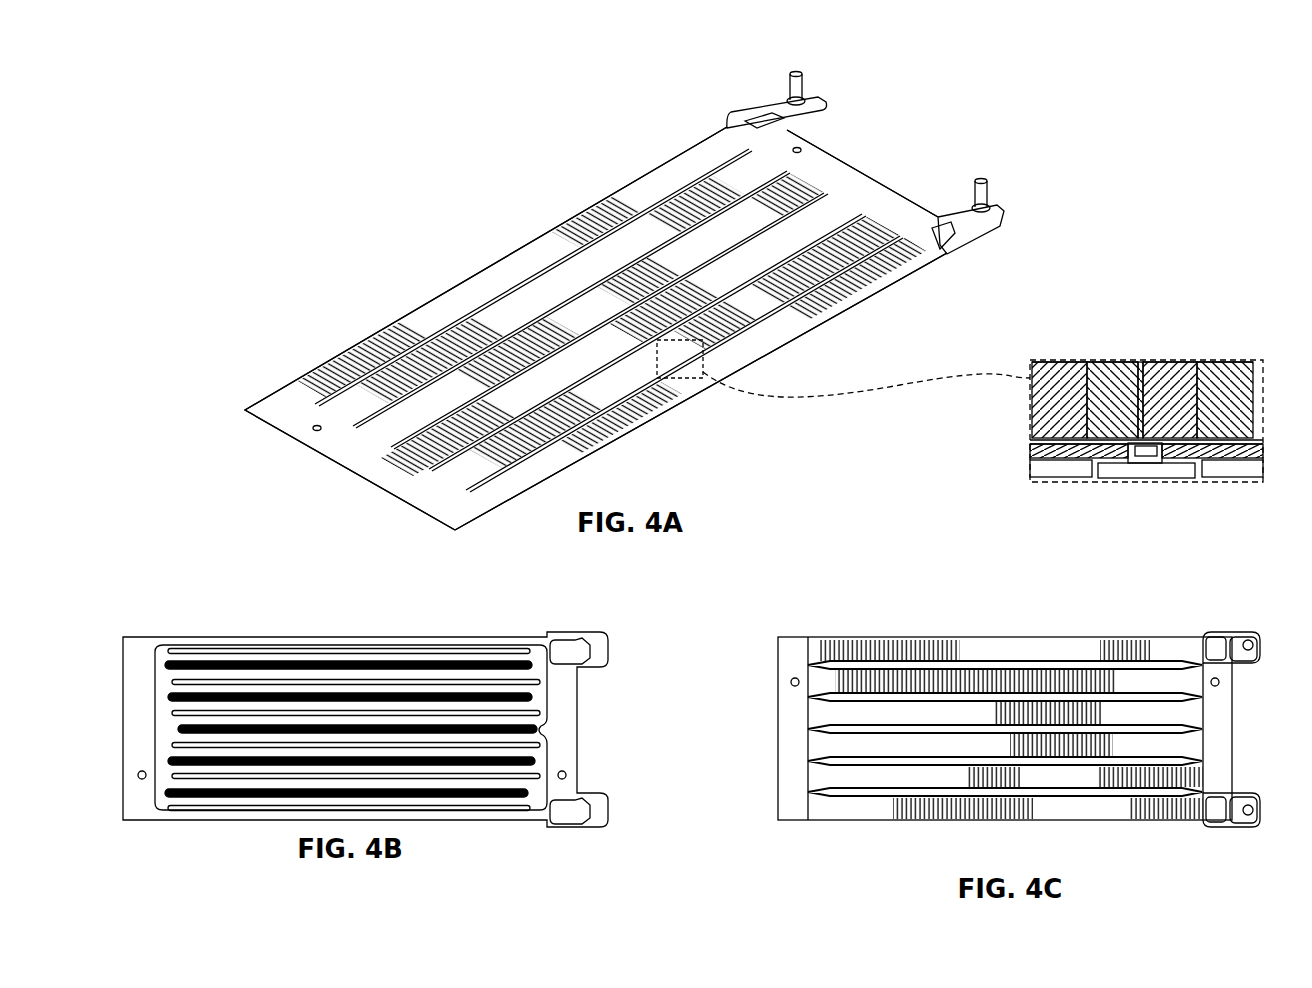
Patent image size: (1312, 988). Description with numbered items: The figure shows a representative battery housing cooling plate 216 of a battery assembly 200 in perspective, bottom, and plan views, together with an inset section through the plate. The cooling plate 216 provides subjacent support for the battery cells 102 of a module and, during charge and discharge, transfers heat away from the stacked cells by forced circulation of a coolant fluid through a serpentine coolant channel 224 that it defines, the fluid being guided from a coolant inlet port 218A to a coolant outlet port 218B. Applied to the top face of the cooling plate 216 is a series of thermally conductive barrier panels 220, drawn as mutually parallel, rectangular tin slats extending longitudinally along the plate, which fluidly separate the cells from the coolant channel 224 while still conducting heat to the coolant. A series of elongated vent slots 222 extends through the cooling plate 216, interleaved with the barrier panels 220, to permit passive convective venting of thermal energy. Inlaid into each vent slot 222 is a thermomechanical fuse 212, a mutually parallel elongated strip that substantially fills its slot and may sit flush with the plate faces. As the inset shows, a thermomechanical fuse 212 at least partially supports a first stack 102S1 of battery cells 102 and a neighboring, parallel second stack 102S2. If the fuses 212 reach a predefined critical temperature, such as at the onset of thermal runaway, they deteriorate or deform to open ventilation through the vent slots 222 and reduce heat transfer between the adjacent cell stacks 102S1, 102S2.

In FIG. 4A, the battery assembly 200 is at (372, 98).
In FIG. 4A, the cooling plate 216 is at (322, 229).
In FIG. 4B, the cooling plate 216 is at (291, 586).
In FIG. 4C, the cooling plate 216 is at (905, 586).
In FIG. 4A, the thermomechanical fuse 212 is at (323, 395).
In FIG. 4B, the thermomechanical fuse 212 is at (185, 663).
In FIG. 4A, the barrier panel 220 is at (560, 252).
In FIG. 4C, the barrier panel 220 is at (835, 652).
In FIG. 4A, the vent slot 222 is at (1157, 467).
In FIG. 4C, the vent slot 222 is at (870, 661).
In FIG. 4B, the serpentine coolant channel 224 is at (538, 650).
In FIG. 4A, the coolant inlet port 218A is at (800, 70).
In FIG. 4C, the coolant inlet port 218A is at (1246, 638).
In FIG. 4A, the coolant outlet port 218B is at (985, 180).
In FIG. 4A, the battery cell 102 is at (1062, 370).
In FIG. 4A, the first stack of battery cells 102S1 is at (1090, 288).
In FIG. 4A, the second stack of battery cells 102S2 is at (1209, 288).